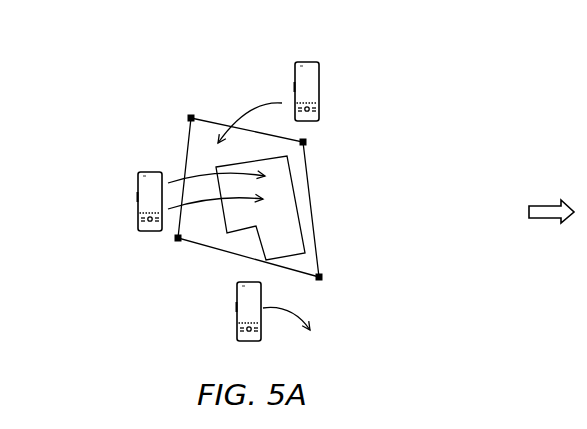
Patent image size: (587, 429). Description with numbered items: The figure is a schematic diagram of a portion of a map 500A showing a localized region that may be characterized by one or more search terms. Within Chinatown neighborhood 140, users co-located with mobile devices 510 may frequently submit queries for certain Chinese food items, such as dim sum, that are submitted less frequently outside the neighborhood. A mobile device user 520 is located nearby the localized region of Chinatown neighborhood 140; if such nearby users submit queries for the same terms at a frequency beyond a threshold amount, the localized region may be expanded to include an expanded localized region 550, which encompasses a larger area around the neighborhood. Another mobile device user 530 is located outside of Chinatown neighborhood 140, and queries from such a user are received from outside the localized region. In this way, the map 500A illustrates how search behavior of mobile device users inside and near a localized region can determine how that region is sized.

The portion of a map 500A is at (143, 36).
The mobile devices 510 is at (147, 189).
The mobile device user 520 is at (303, 84).
The mobile device user 530 is at (247, 303).
The Chinatown neighborhood 140 is at (278, 205).
The expanded localized region 550 is at (315, 250).